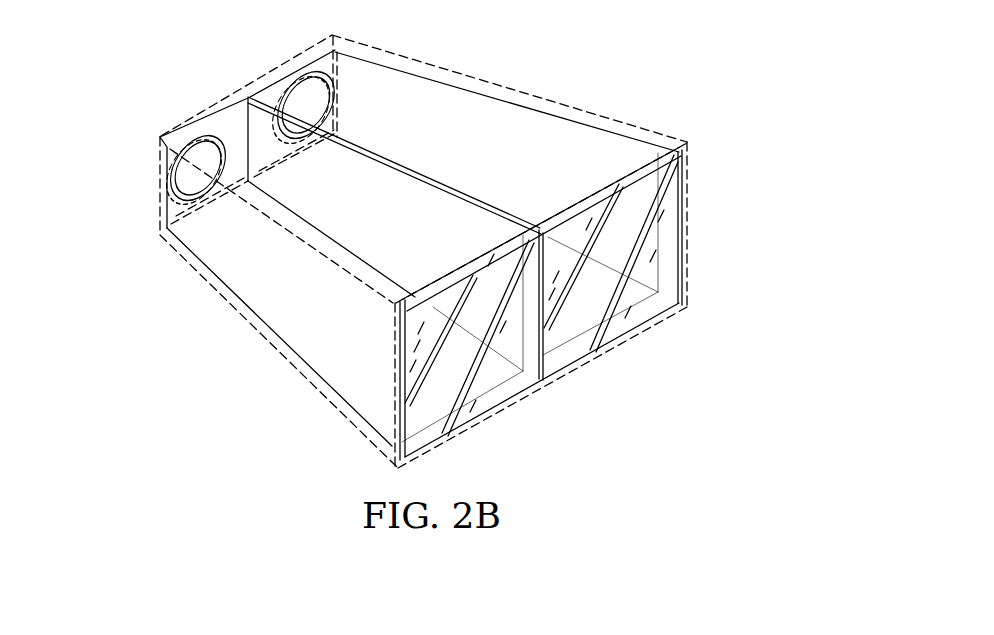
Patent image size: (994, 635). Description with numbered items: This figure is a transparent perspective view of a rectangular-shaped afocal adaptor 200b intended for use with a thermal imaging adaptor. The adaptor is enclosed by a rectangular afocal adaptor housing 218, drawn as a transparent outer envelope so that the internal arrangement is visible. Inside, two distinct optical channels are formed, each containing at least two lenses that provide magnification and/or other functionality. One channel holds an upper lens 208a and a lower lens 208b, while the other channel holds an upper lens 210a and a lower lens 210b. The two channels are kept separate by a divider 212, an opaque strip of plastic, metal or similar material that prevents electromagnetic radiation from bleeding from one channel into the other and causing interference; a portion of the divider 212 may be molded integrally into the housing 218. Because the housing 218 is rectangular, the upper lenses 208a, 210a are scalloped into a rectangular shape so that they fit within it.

The afocal adaptor 200b is at (610, 76).
The afocal adaptor housing 218 is at (507, 90).
The lens 208b is at (212, 155).
The lens 210b is at (313, 113).
The divider 212 is at (443, 183).
The lens 208a is at (515, 380).
The lens 210a is at (653, 302).